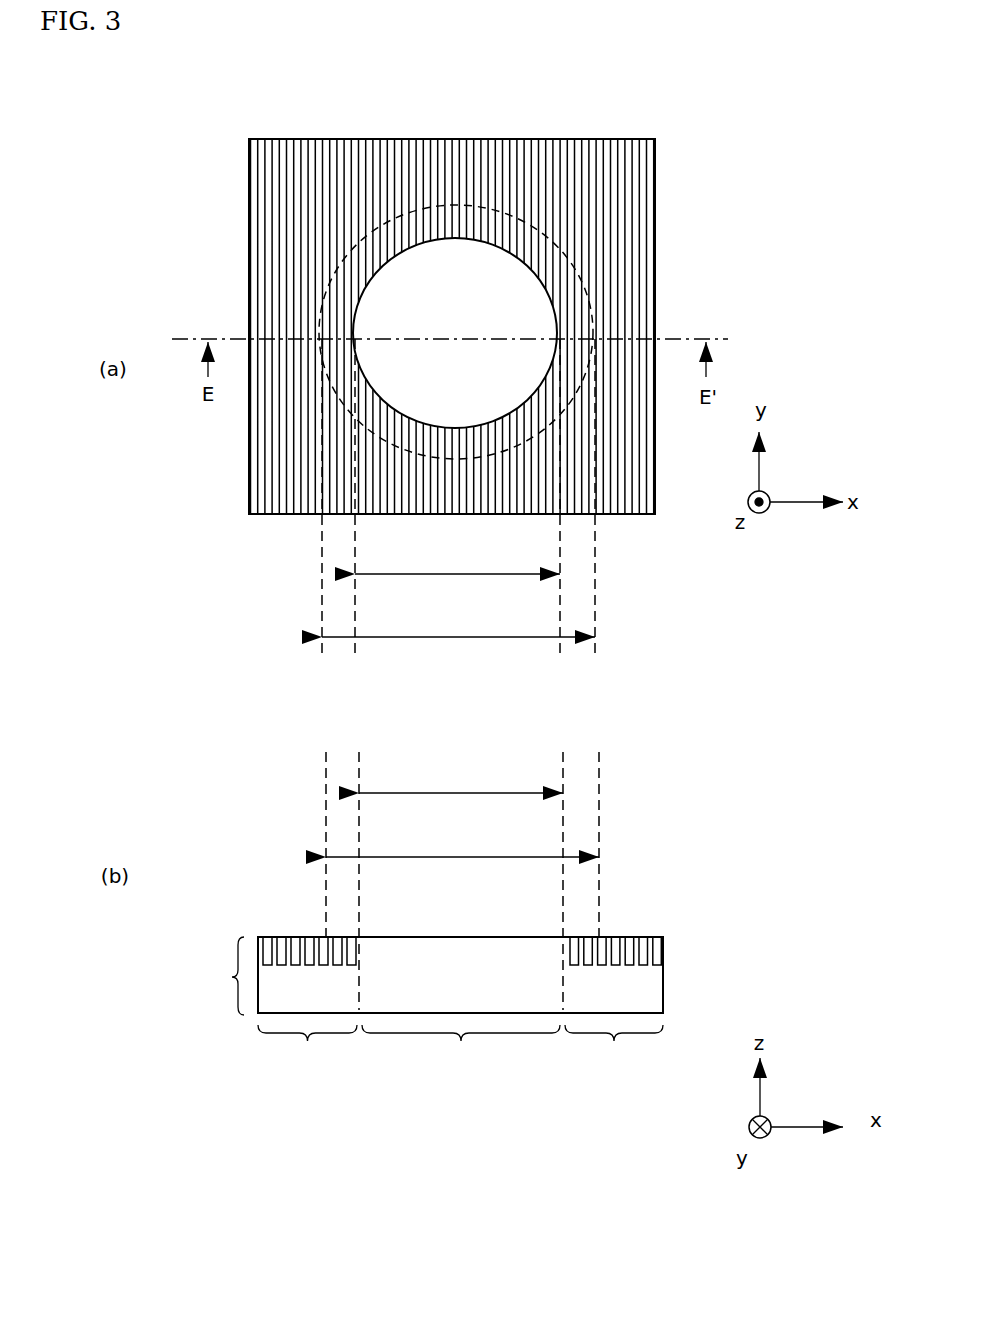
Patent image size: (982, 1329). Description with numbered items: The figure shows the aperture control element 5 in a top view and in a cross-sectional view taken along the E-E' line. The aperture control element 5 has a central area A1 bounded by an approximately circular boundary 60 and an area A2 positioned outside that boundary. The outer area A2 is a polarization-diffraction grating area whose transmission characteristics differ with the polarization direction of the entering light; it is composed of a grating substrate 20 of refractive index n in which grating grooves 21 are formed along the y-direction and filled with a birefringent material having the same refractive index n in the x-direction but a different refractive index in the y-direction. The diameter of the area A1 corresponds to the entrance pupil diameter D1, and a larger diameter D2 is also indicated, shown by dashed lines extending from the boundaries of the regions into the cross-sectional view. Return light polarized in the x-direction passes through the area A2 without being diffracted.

The aperture control element 5 is at (255, 467).
The grating substrate 20 is at (650, 993).
The grating grooves 21 is at (653, 937).
The approximately circular boundary 60 is at (527, 260).
The area A1 is at (438, 272).
The area A2 is at (348, 281).
The entrance pupil diameter D1 is at (459, 668).
The second diameter D2 is at (460, 732).